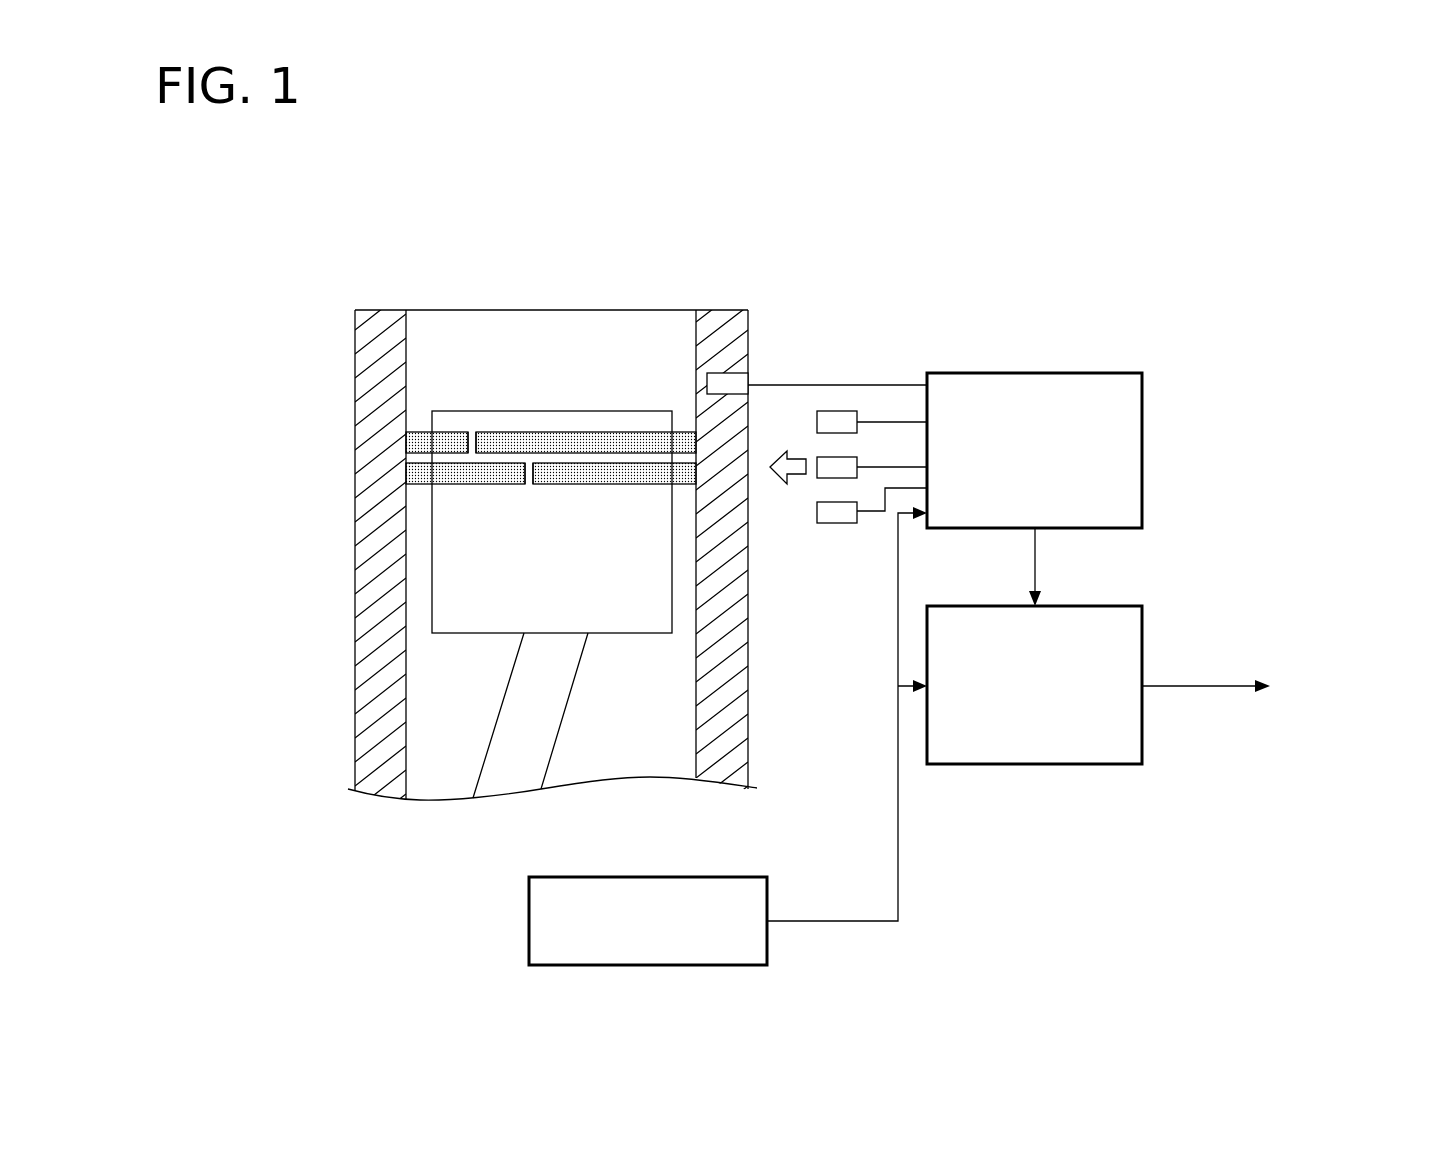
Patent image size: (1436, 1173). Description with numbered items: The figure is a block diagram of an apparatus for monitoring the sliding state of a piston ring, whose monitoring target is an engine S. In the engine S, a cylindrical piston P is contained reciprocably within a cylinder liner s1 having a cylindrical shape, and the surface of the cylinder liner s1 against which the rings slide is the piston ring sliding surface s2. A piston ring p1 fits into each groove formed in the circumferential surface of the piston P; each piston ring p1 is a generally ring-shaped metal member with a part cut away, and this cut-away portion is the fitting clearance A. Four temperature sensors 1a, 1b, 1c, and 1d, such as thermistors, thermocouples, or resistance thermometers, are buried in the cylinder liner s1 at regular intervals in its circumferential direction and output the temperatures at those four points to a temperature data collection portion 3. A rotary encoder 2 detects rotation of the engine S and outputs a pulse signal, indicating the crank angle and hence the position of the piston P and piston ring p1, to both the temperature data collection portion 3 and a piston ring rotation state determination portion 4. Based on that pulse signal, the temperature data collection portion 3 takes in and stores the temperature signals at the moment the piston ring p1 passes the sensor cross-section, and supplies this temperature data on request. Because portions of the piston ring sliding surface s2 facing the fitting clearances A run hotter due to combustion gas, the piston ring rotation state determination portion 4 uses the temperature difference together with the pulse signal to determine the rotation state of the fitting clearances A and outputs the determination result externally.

The engine S is at (605, 235).
The cylinder liner s1 is at (378, 549).
The piston ring sliding surface s2 is at (406, 341).
The piston P is at (613, 617).
The piston ring p1 is at (627, 444).
The fitting clearance A is at (528, 479).
The temperature sensor 1a is at (738, 381).
The temperature sensor 1b is at (825, 421).
The temperature sensor 1c is at (830, 473).
The temperature sensor 1d is at (838, 515).
The rotary encoder 2 is at (529, 920).
The temperature data collection portion 3 is at (1142, 447).
The piston ring rotation state determination portion 4 is at (1142, 646).